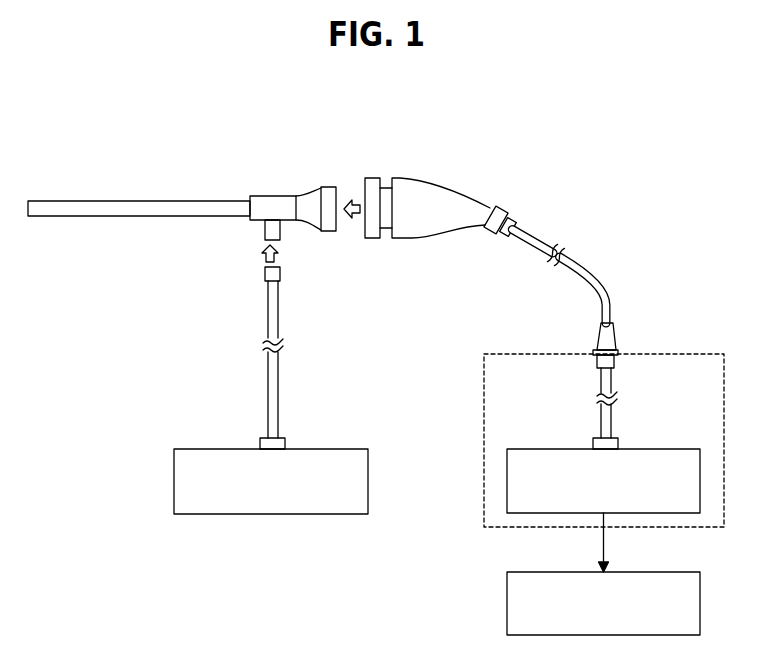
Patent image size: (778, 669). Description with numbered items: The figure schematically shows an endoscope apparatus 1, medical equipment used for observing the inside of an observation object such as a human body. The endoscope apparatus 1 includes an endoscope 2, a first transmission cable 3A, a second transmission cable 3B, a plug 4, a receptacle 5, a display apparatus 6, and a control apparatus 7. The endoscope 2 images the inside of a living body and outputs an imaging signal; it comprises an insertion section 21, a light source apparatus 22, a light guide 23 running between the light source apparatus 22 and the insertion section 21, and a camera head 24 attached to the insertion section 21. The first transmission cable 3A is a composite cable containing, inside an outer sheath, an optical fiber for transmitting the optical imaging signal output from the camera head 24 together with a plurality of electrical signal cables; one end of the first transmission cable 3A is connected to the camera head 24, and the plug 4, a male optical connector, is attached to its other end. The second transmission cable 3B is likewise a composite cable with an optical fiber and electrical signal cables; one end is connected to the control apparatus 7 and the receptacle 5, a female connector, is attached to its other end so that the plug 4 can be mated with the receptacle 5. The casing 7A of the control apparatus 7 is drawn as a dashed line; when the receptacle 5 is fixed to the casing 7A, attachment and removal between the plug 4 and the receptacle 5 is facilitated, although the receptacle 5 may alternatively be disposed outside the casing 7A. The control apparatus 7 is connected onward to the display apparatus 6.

The endoscope apparatus 1 is at (574, 125).
The endoscope 2 is at (416, 597).
The insertion section 21 is at (120, 217).
The light source apparatus 22 is at (310, 514).
The light guide 23 is at (266, 377).
The camera head 24 is at (423, 230).
The first transmission cable 3A is at (611, 296).
The second transmission cable 3B is at (610, 423).
The plug 4 is at (613, 338).
The receptacle 5 is at (611, 360).
The display apparatus 6 is at (658, 572).
The control apparatus 7 is at (660, 448).
The casing 7A is at (692, 352).